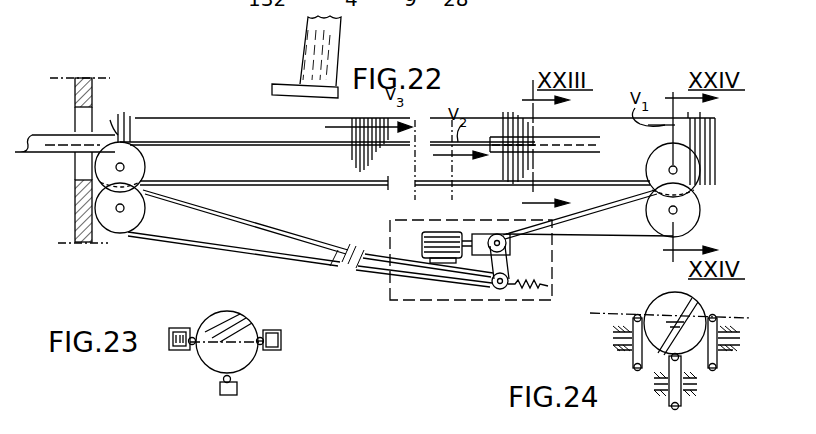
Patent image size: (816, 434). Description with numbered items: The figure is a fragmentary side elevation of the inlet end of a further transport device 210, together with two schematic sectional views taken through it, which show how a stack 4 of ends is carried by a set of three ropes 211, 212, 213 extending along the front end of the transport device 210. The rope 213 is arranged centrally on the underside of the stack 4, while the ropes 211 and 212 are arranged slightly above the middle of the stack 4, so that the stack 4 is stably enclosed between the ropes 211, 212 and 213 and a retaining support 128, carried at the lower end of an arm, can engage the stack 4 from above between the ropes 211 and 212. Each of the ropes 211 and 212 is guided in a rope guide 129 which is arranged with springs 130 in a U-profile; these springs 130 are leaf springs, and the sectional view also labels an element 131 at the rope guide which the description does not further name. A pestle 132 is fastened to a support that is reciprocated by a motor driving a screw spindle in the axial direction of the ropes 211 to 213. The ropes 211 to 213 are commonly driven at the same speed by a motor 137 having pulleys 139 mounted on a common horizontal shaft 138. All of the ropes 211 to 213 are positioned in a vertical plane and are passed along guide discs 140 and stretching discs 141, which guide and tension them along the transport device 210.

In FIG. 23, the stack 4 is at (222, 325).
In FIG. 22, the retaining support 128 is at (280, 92).
In FIG. 23, the rope guide 129 is at (266, 350).
In FIG. 23, the springs 130 is at (282, 340).
In FIG. 23, the motor housing 131 is at (278, 332).
In FIG. 22, the pestle 132 is at (118, 118).
In FIG. 22, the motor 137 is at (424, 240).
In FIG. 22, the common horizontal shaft 138 is at (500, 232).
In FIG. 22, the pulleys 139 is at (510, 252).
In FIG. 22, the guide discs 140 is at (130, 190).
In FIG. 24, the guide discs 140 is at (630, 355).
In FIG. 22, the stretching discs 141 is at (500, 290).
In FIG. 22, the transport device 210 is at (220, 62).
In FIG. 23, the rope 211 is at (185, 322).
In FIG. 24, the rope 211 is at (635, 320).
In FIG. 23, the rope 212 is at (261, 336).
In FIG. 24, the rope 212 is at (715, 320).
In FIG. 23, the rope 213 is at (220, 388).
In FIG. 24, the rope 213 is at (668, 360).